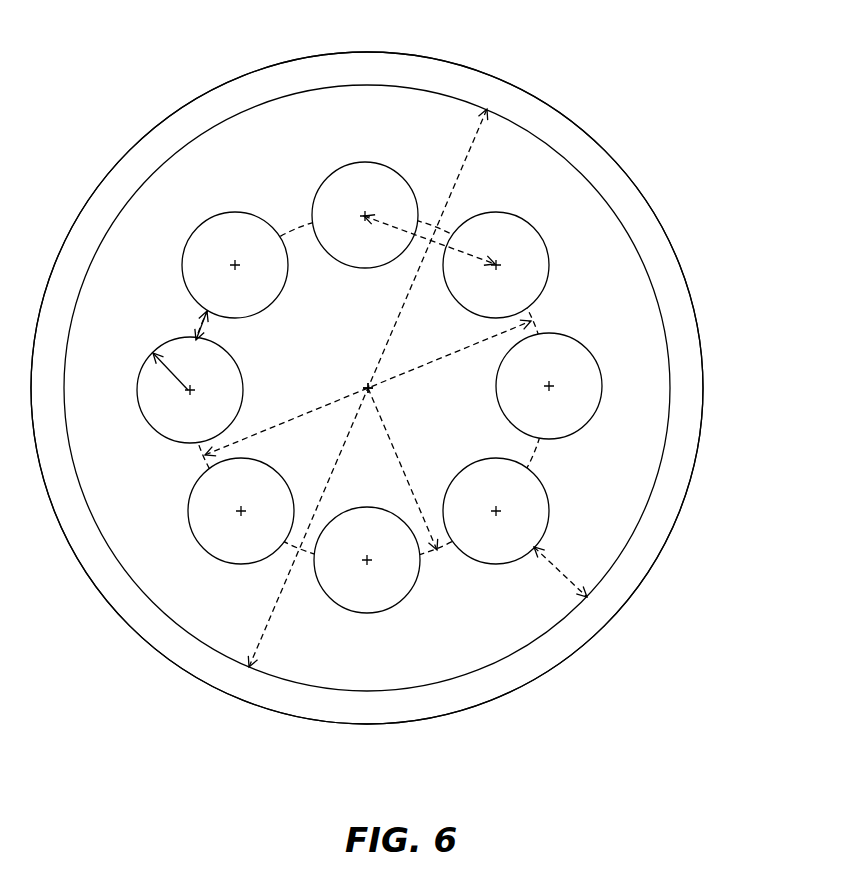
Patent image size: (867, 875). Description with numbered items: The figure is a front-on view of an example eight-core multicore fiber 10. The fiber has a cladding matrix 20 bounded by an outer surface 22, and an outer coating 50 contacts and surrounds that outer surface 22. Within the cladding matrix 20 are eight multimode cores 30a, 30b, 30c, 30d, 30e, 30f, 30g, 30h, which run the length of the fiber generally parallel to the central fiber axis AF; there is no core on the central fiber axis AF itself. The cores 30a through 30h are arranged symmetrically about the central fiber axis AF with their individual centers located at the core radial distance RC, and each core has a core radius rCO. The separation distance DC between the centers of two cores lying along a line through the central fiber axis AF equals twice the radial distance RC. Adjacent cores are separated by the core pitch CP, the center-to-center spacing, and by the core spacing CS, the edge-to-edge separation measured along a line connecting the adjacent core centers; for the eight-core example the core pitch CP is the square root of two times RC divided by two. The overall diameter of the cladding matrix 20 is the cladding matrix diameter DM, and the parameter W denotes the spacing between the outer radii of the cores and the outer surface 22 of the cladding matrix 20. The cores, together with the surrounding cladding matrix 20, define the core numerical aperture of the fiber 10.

The multicore fiber 10 is at (166, 60).
The outer coating 50 is at (553, 133).
The cladding matrix 20 is at (552, 186).
The outer surface 22 is at (588, 184).
The core 30a is at (367, 165).
The core 30b is at (480, 216).
The core 30c is at (573, 340).
The core 30d is at (530, 470).
The core 30e is at (369, 613).
The core 30f is at (241, 564).
The core 30g is at (162, 432).
The core 30h is at (197, 302).
The core spacing CS is at (423, 237).
The core pitch CP is at (212, 327).
The core radius rCO is at (160, 380).
The core separation distance DC is at (328, 403).
The central fiber axis AF is at (368, 388).
The core radial distance RC is at (398, 458).
The cladding matrix diameter DM is at (262, 623).
The spacing to outer edge W is at (550, 578).